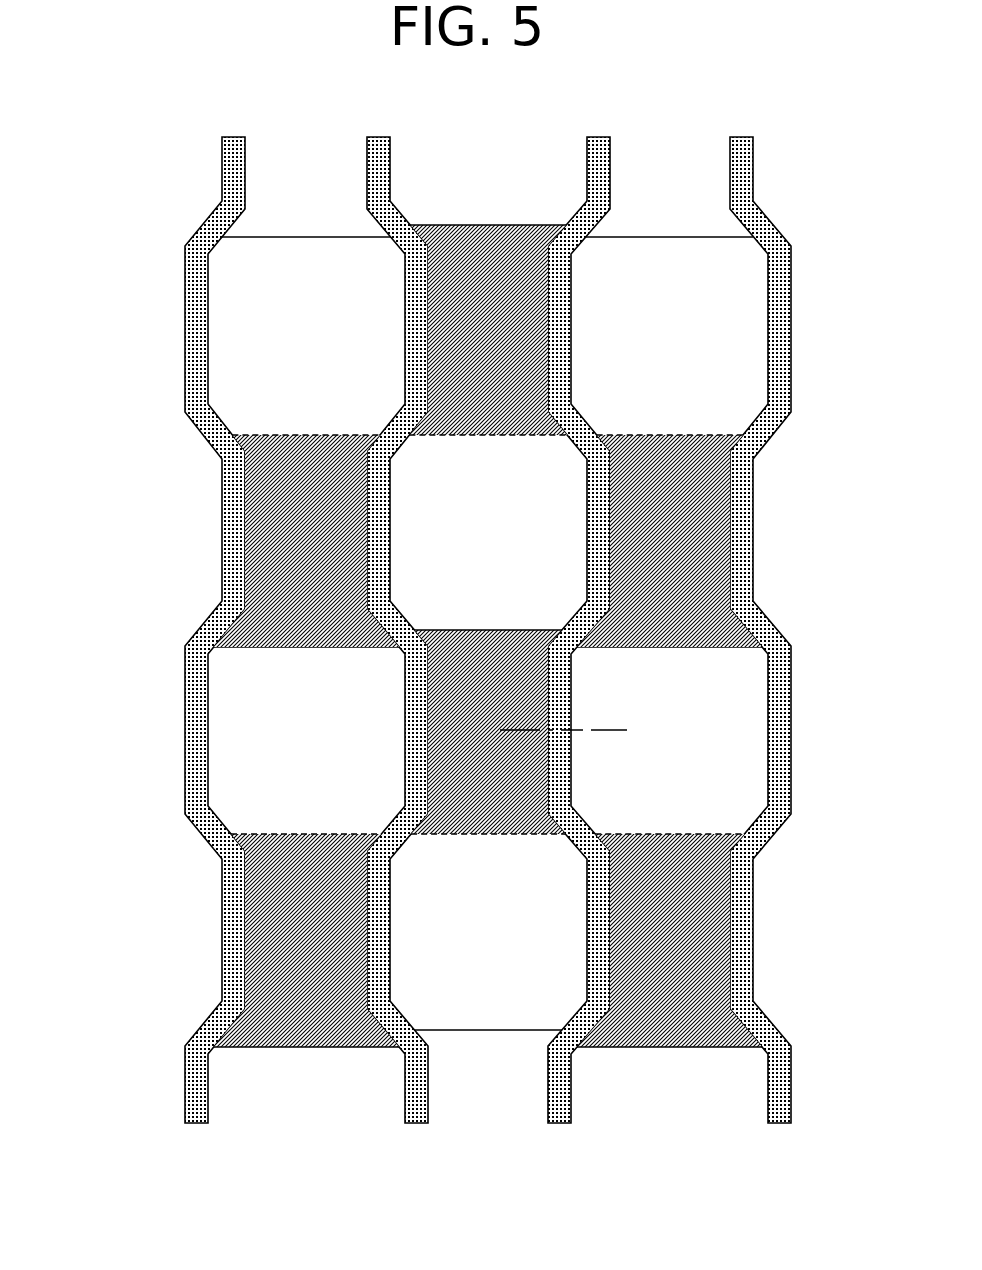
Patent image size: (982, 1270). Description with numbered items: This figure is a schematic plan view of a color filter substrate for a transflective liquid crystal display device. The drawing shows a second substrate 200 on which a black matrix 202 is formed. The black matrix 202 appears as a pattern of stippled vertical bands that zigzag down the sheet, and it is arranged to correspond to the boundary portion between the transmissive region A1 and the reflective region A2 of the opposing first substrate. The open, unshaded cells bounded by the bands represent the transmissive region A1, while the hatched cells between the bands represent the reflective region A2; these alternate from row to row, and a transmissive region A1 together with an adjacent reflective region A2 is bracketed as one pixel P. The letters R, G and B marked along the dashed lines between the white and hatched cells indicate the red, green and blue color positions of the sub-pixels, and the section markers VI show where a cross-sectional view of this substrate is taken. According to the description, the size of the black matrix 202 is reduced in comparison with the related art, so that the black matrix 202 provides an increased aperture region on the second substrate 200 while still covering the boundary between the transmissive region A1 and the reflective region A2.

The second substrate 200 is at (468, 630).
The black matrix 202 is at (795, 737).
The pixel P is at (396, 636).
The transmissive region A1 is at (252, 335).
The reflective region A2 is at (277, 482).
The red sub-pixel R is at (488, 633).
The green sub-pixel G is at (399, 634).
The blue sub-pixel B is at (577, 634).
The section line VI- VI is at (602, 729).